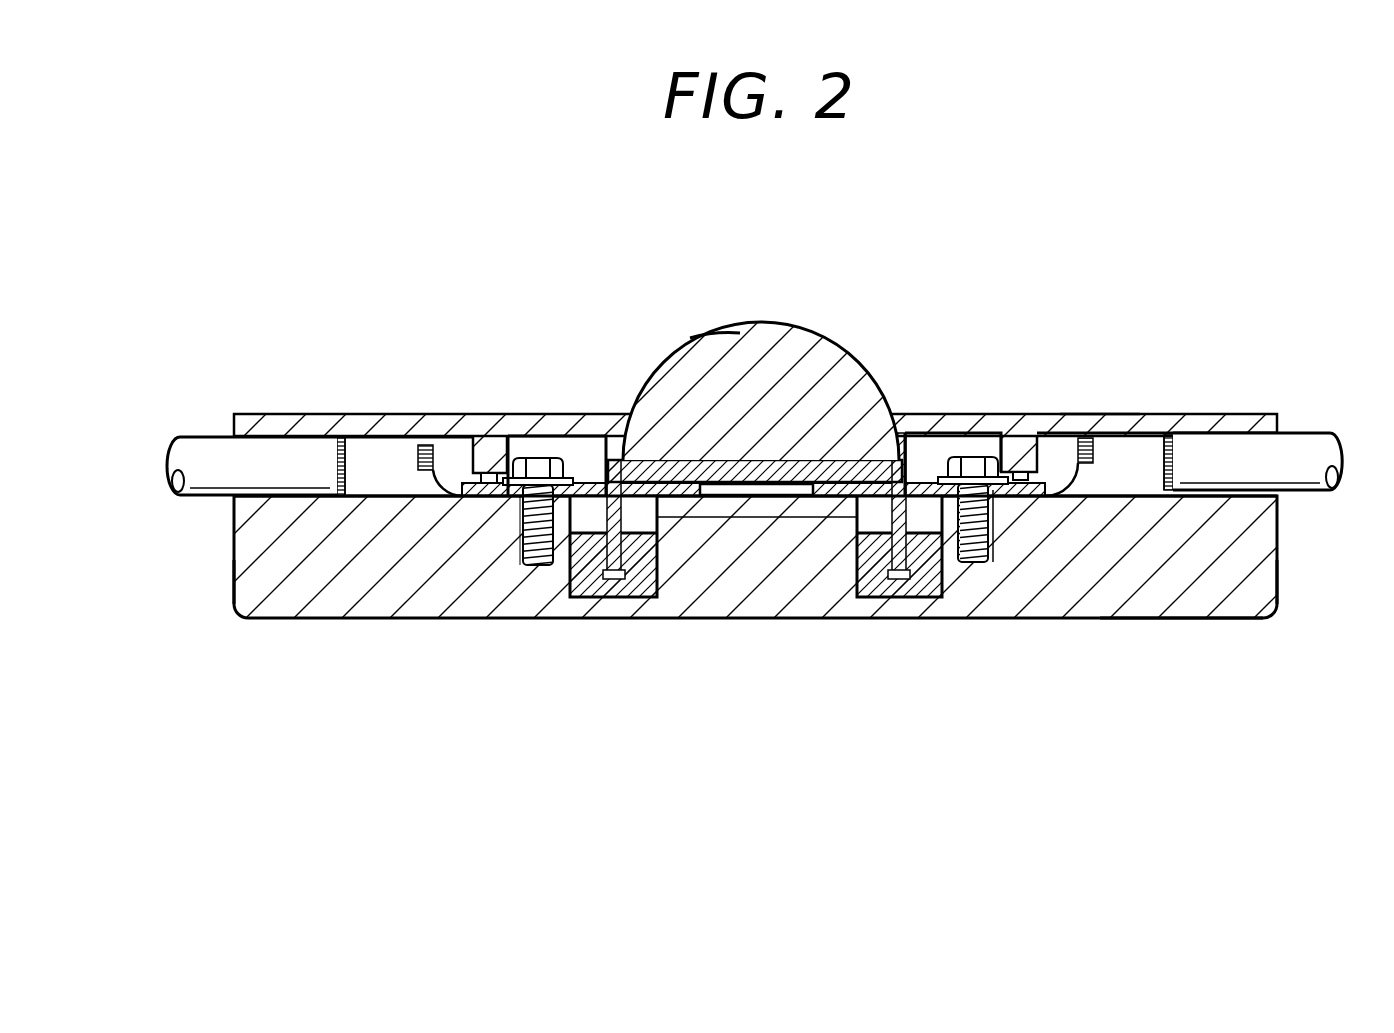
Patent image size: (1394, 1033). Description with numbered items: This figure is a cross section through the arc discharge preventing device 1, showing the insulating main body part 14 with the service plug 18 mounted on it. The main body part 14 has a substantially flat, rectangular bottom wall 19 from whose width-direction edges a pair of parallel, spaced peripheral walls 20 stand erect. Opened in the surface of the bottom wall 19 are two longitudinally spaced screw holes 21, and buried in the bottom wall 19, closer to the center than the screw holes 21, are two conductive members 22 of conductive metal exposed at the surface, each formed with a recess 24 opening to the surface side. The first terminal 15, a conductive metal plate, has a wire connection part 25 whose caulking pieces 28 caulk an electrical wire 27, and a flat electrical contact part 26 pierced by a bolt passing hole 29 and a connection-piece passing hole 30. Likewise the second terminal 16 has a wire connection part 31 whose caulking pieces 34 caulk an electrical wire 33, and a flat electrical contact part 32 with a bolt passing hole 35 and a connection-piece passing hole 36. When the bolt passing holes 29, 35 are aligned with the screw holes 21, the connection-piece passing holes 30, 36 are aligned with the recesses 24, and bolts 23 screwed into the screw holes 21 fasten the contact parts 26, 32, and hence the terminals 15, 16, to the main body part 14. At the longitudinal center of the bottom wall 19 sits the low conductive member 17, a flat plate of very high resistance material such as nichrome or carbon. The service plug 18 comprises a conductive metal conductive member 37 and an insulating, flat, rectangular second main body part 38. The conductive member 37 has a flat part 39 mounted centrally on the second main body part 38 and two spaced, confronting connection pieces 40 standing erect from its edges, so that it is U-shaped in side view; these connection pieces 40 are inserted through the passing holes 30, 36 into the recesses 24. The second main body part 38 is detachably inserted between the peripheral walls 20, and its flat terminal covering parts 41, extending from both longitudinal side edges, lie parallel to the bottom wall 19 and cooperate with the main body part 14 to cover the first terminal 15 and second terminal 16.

The arc discharge preventing device 1 is at (770, 238).
The main body part 14 is at (1282, 541).
The first terminal 15 is at (390, 430).
The second terminal 16 is at (1100, 426).
The low conductive member 17 is at (760, 520).
The service plug 18 is at (830, 342).
The bottom wall 19 is at (1203, 605).
The peripheral walls 20 is at (1053, 440).
The screw holes 21 is at (530, 568).
The conductive members 22 is at (645, 590).
The bolts 23 is at (532, 456).
The recesses 24 is at (600, 560).
The wire connection part 25 is at (391, 505).
The electrical contact part 26 is at (588, 484).
The electrical wire 27 is at (200, 442).
The caulking pieces 28 is at (372, 445).
The bolt passing hole 29 is at (500, 520).
The connection-piece passing hole 30 is at (615, 460).
The wire connection part 31 is at (1104, 510).
The electrical contact part 32 is at (920, 487).
The electrical wire 33 is at (1313, 437).
The caulking pieces 34 is at (1142, 442).
The bolt passing hole 35 is at (1005, 565).
The connection-piece passing hole 36 is at (899, 485).
The conductive member 37 is at (786, 466).
The second main body part 38 is at (710, 334).
The flat part 39 is at (745, 500).
The connection pieces 40 is at (630, 582).
The terminal covering parts 41 is at (257, 422).